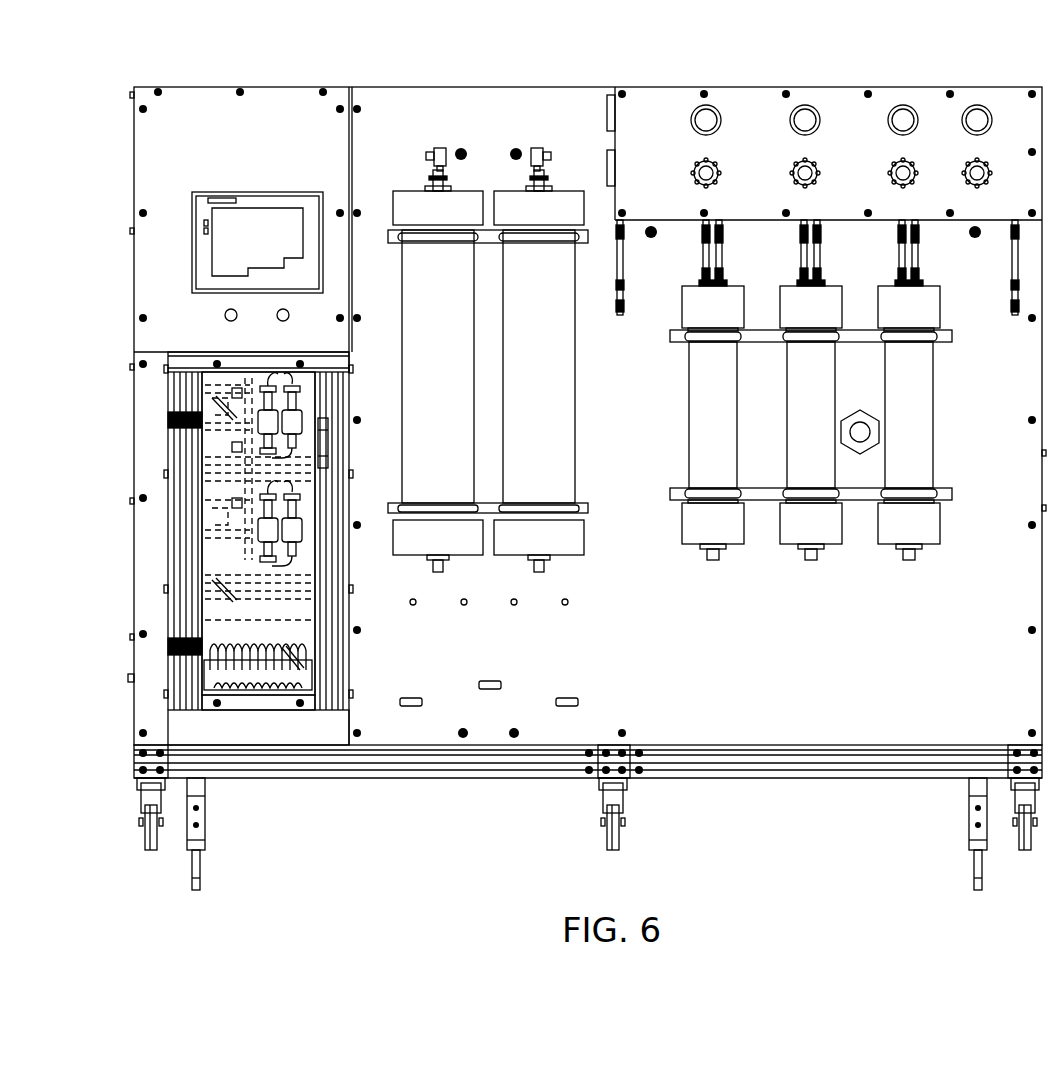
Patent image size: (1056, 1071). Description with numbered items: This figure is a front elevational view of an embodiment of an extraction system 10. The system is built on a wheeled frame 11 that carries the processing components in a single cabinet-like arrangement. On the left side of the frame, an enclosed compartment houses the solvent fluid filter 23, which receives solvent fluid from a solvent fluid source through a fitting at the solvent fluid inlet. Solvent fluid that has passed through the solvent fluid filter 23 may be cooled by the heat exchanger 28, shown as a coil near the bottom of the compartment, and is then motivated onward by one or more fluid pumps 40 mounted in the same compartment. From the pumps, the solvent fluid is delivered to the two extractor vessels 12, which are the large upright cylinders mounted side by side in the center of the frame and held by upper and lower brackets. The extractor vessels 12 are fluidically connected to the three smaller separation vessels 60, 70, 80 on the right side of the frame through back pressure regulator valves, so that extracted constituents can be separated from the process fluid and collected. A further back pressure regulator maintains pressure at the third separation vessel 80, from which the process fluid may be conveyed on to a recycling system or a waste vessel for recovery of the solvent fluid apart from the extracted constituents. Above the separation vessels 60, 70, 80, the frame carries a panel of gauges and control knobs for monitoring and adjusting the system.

The extraction system 10 is at (120, 56).
The frame 11 is at (128, 678).
The extractor vessels 12 is at (398, 296).
The solvent fluid filter 23 is at (185, 683).
The heat exchanger 28 is at (253, 700).
The fluid pumps 40 is at (252, 442).
The separation vessel 60 is at (680, 460).
The separation vessel 70 is at (782, 392).
The third separation vessel 80 is at (946, 392).